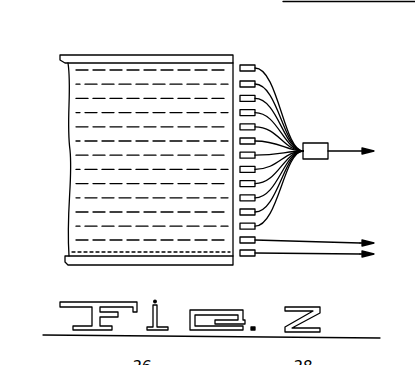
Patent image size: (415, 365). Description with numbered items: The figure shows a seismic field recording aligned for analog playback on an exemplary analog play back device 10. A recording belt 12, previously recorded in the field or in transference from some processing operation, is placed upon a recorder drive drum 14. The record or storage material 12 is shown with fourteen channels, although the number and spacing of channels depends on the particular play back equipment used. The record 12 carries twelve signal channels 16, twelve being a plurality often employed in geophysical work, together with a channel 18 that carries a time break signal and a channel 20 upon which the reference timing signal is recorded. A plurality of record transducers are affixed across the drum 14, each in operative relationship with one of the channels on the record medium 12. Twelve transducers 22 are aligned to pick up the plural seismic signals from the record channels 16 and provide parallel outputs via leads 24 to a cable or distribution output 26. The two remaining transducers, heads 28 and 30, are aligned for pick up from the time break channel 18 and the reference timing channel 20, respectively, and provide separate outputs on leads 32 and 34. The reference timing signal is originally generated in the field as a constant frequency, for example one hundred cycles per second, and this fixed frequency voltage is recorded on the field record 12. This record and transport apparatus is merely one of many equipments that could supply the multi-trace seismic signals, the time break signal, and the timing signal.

The analog play back device 10 is at (93, 55).
The recording belt 12 is at (106, 63).
The recorder drive drum 14 is at (165, 63).
The signal channels 16 is at (67, 64).
The time break channel 18 is at (74, 245).
The reference timing channel 20 is at (97, 258).
The transducers 22 is at (257, 67).
The leads 24 is at (283, 93).
The cable or distribution output 26 is at (346, 149).
The head 28 is at (258, 241).
The head 30 is at (246, 259).
The lead 32 is at (329, 243).
The lead 34 is at (326, 256).